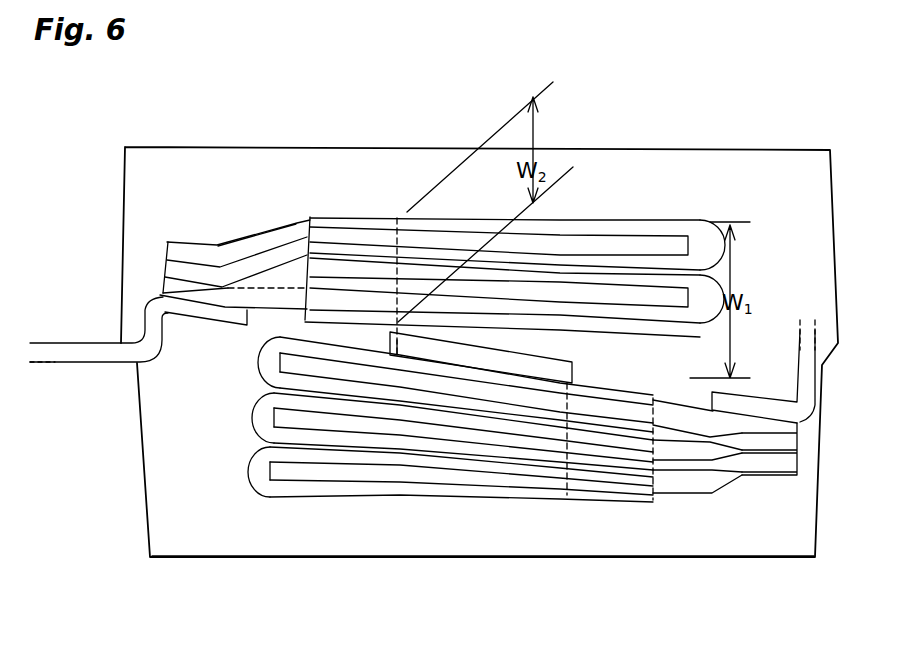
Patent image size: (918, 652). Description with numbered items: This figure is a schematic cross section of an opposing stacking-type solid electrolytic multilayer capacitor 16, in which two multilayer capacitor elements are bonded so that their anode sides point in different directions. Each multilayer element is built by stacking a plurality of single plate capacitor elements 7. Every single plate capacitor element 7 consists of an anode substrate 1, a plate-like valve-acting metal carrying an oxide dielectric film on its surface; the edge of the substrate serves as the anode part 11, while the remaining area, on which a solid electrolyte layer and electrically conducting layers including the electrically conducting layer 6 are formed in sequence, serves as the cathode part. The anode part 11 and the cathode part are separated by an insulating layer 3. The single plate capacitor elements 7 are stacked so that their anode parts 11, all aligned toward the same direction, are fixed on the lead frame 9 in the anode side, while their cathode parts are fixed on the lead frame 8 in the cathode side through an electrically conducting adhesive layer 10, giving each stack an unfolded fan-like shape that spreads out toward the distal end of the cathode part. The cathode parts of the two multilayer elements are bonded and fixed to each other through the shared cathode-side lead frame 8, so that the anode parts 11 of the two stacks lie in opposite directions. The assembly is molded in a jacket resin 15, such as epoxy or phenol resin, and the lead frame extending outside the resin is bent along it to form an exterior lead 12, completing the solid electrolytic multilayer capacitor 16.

The anode substrate 1 is at (178, 240).
The insulating layer 3 is at (322, 215).
The electrically conducting layer 6 is at (665, 225).
The single plate capacitor element 7 is at (258, 420).
The lead frame in the cathode side 8 is at (545, 372).
The lead frame in the anode side 9 is at (205, 310).
The electrically conducting adhesive layer 10 is at (432, 455).
The anode part 11 is at (232, 242).
The exterior lead 12 is at (62, 353).
The jacket resin 15 is at (275, 525).
The solid electrolytic multilayer capacitor 16 is at (205, 147).